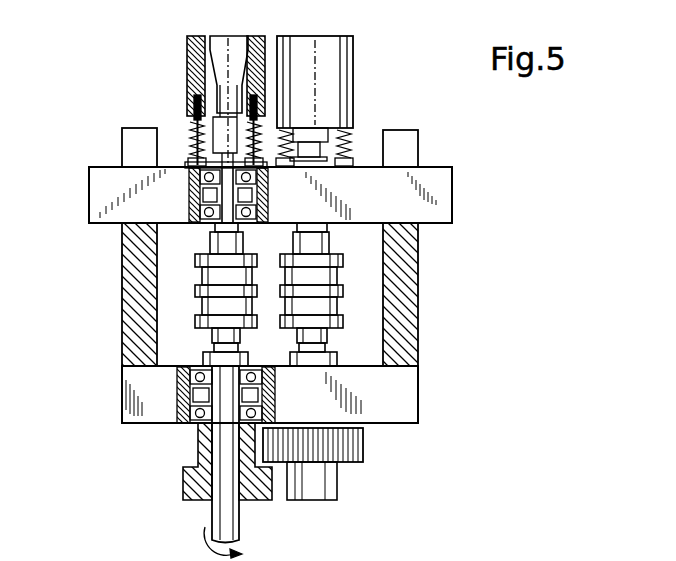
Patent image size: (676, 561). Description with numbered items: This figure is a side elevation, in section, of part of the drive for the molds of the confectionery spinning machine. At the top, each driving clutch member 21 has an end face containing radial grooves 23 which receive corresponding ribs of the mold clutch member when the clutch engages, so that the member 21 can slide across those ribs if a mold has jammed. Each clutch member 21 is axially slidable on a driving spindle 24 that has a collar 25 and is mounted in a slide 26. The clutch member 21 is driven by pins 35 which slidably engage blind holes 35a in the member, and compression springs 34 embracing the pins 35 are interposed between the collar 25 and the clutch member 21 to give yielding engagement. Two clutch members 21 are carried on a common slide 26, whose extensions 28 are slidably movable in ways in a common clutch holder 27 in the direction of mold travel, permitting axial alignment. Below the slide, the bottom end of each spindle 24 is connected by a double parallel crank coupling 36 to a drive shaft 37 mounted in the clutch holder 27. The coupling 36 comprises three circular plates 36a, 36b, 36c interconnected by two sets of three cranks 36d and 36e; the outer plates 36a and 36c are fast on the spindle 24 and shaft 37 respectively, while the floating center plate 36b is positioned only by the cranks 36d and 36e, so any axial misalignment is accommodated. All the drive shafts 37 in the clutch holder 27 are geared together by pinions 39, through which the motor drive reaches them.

The driving clutch member 21 is at (195, 38).
The radial grooves 23 is at (225, 38).
The driving spindle 24 is at (418, 145).
The collar 25 is at (353, 152).
The slide 26 is at (347, 190).
The clutch holder 27 is at (395, 350).
The extensions 28 is at (440, 191).
The compression springs 34 is at (192, 140).
The pins 35 is at (255, 37).
The blind holes 35a is at (193, 62).
The double parallel crank coupling 36 is at (273, 308).
The outer plate 36a is at (213, 263).
The center plate 36b is at (197, 287).
The outer plate 36c is at (122, 365).
The cranks 36d is at (315, 282).
The cranks 36e is at (330, 320).
The drive shaft 37 is at (200, 418).
The pinions 39 is at (306, 477).